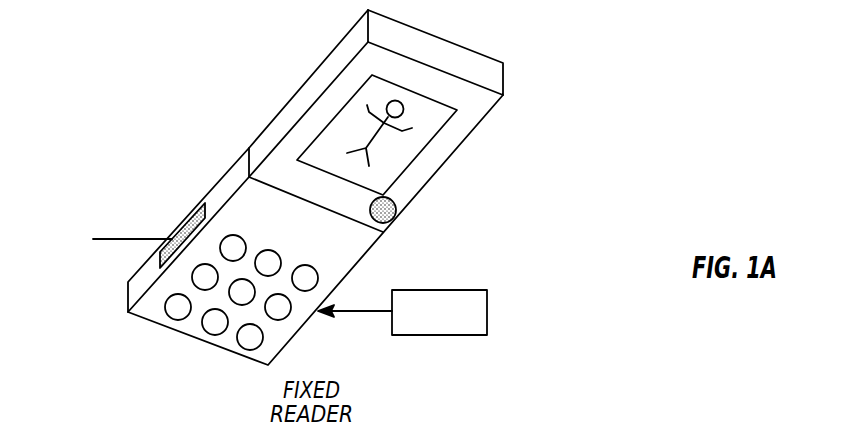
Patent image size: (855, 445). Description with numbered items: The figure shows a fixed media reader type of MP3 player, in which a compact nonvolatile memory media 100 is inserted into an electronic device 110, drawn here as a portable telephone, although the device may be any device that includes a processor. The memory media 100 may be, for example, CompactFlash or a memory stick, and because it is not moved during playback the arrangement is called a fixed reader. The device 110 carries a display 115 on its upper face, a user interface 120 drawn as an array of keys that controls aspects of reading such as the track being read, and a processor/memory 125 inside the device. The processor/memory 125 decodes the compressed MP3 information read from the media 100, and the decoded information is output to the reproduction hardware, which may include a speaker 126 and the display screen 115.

The memory media 100 is at (473, 288).
The device 110 is at (515, 95).
The display 115 is at (423, 133).
The user interface 120 is at (190, 328).
The processor/memory 125 is at (192, 222).
The speaker 126 is at (397, 215).